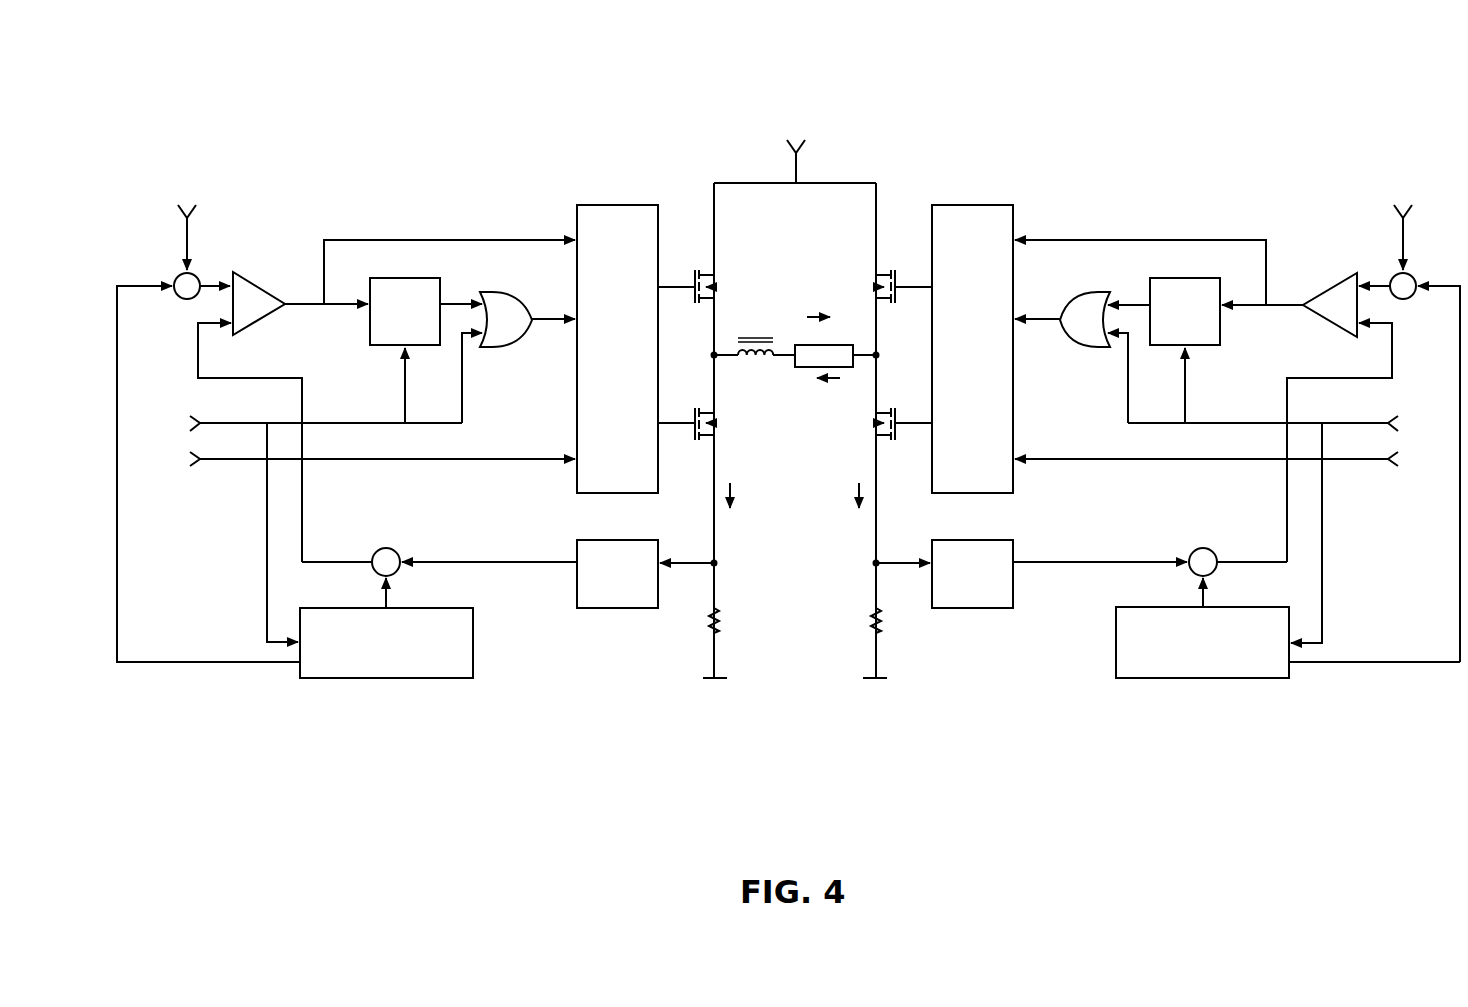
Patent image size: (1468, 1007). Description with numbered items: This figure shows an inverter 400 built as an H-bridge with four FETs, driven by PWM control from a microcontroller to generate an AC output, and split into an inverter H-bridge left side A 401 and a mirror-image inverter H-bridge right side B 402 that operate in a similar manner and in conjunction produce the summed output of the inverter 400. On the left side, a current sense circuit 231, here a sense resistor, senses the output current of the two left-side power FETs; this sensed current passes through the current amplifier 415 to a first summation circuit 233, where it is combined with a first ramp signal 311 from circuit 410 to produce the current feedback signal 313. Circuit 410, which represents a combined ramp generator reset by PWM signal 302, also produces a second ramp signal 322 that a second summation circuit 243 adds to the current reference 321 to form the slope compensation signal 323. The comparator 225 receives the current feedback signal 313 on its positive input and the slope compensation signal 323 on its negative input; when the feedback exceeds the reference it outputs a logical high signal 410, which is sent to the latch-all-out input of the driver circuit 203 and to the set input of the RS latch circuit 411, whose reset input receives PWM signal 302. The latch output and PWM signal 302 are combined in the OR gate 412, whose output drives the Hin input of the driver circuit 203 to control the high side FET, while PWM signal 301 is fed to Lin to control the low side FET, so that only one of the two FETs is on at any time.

The inverter 400 is at (795, 339).
The inverter H-bridge left side A 401 is at (403, 110).
The inverter H-bridge right side B 402 is at (1163, 110).
The current reference 321 is at (208, 177).
The second summation circuit 243 is at (168, 276).
The slope compensation signal 323 is at (211, 292).
The comparator 225 is at (250, 282).
The circuit / comparator output signal 410 is at (422, 240).
The RS latch circuit 411 is at (392, 345).
The OR gate 412 is at (502, 347).
The driver circuit 203 is at (630, 157).
The PWM signal 301 is at (443, 460).
The current feedback signal 313 is at (304, 530).
The PWM signal 302 is at (265, 537).
The first summation circuit 233 is at (390, 550).
The first ramp signal 311 is at (502, 560).
The second ramp signal 322 is at (153, 662).
The current amplifier 415 is at (633, 685).
The current sense circuit 231 is at (723, 647).